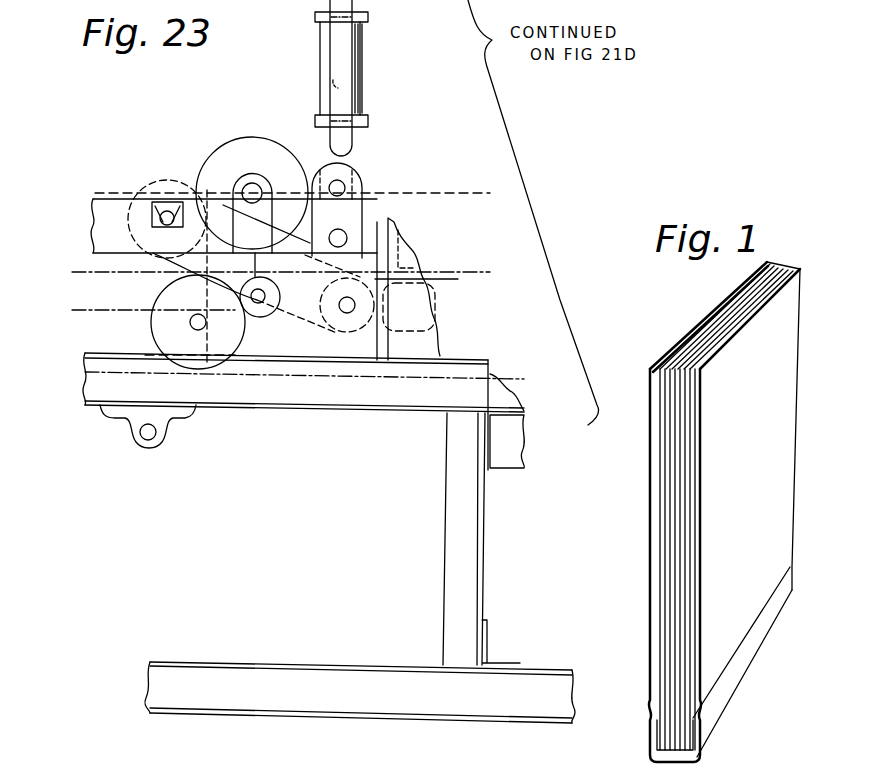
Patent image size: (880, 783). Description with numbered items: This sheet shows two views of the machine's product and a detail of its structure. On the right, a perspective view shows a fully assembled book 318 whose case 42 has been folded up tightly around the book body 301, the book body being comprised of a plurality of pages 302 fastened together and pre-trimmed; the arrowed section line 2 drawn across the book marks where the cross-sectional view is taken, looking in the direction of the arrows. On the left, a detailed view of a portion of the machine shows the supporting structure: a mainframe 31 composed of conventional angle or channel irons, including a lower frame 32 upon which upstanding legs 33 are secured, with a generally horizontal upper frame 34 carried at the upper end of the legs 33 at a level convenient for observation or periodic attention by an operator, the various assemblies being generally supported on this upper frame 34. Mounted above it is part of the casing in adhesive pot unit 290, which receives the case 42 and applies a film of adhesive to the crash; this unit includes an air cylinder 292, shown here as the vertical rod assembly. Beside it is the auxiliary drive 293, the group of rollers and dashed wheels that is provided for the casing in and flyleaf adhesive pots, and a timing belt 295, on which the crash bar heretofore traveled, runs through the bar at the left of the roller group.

In FIG. 23, the casing in adhesive pot unit 290 is at (276, 93).
In FIG. 23, the air cylinder 292 is at (365, 80).
In FIG. 23, the auxiliary drive 293 is at (368, 310).
In FIG. 23, the timing belt 295 is at (82, 270).
In FIG. 23, the upper frame 34 is at (388, 393).
In FIG. 23, the upstanding legs 33 is at (446, 503).
In FIG. 23, the lower frame 32 is at (312, 662).
In FIG. 23, the mainframe 31 is at (383, 654).
In FIG. 1, the section line 2 is at (822, 335).
In FIG. 1, the case 42 is at (684, 512).
In FIG. 1, the book body 301 is at (670, 591).
In FIG. 1, the pages 302 is at (668, 632).
In FIG. 1, the assembled book 318 is at (748, 711).